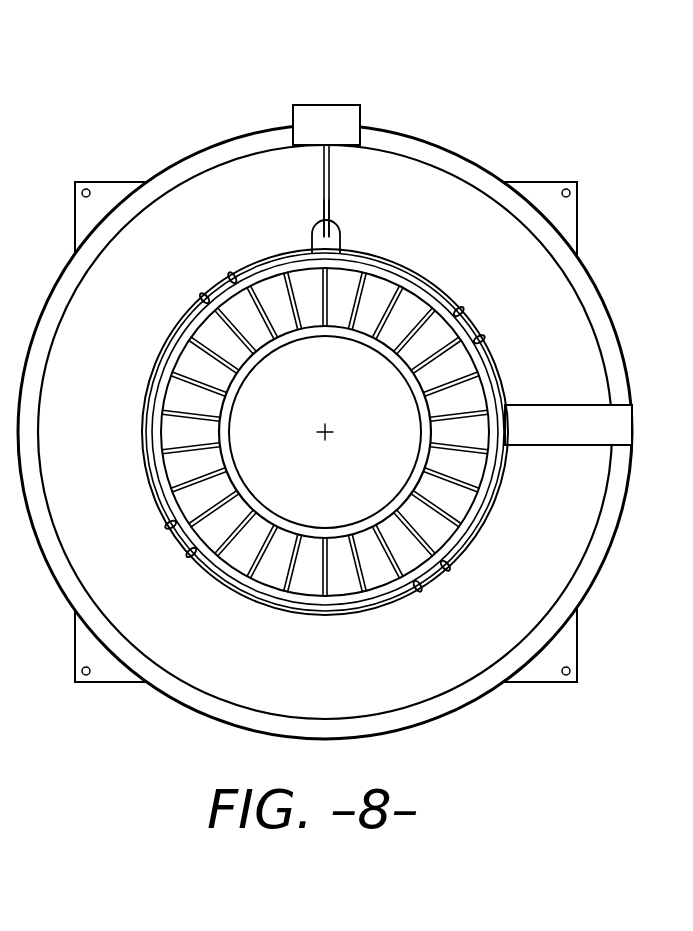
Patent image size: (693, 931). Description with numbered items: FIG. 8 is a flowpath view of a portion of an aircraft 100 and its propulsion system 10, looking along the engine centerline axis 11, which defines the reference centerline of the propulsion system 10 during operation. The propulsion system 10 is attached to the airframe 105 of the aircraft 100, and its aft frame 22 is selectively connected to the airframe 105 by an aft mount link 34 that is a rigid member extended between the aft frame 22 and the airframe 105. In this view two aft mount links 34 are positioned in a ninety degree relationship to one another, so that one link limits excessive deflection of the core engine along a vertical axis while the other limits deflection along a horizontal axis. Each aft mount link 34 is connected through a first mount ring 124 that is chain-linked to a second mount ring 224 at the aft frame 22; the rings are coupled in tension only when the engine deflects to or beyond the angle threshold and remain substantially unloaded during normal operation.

The aircraft 100 is at (500, 126).
The airframe 105 is at (650, 388).
The propulsion system 10 is at (454, 284).
The aft frame 22 is at (304, 282).
The aft mount link 34 is at (346, 181).
The first mount ring 124 is at (316, 228).
The second mount ring 224 is at (345, 228).
The engine centerline axis 11 is at (329, 438).